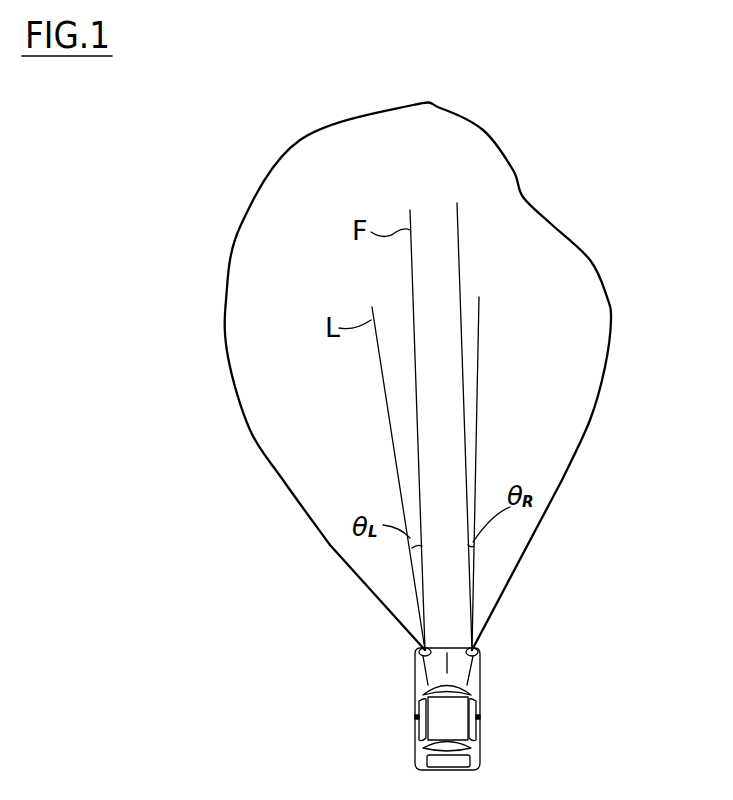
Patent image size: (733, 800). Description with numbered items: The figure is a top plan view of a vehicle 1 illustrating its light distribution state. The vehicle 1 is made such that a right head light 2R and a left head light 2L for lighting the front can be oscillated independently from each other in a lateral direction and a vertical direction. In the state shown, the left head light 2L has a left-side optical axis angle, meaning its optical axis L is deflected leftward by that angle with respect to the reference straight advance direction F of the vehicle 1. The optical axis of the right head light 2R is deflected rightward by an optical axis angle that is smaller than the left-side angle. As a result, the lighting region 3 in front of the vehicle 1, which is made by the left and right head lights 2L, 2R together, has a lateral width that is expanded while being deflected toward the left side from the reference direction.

The vehicle 1 is at (413, 735).
The left head light 2L is at (419, 653).
The right head light 2R is at (478, 653).
The lighting region 3 is at (605, 363).